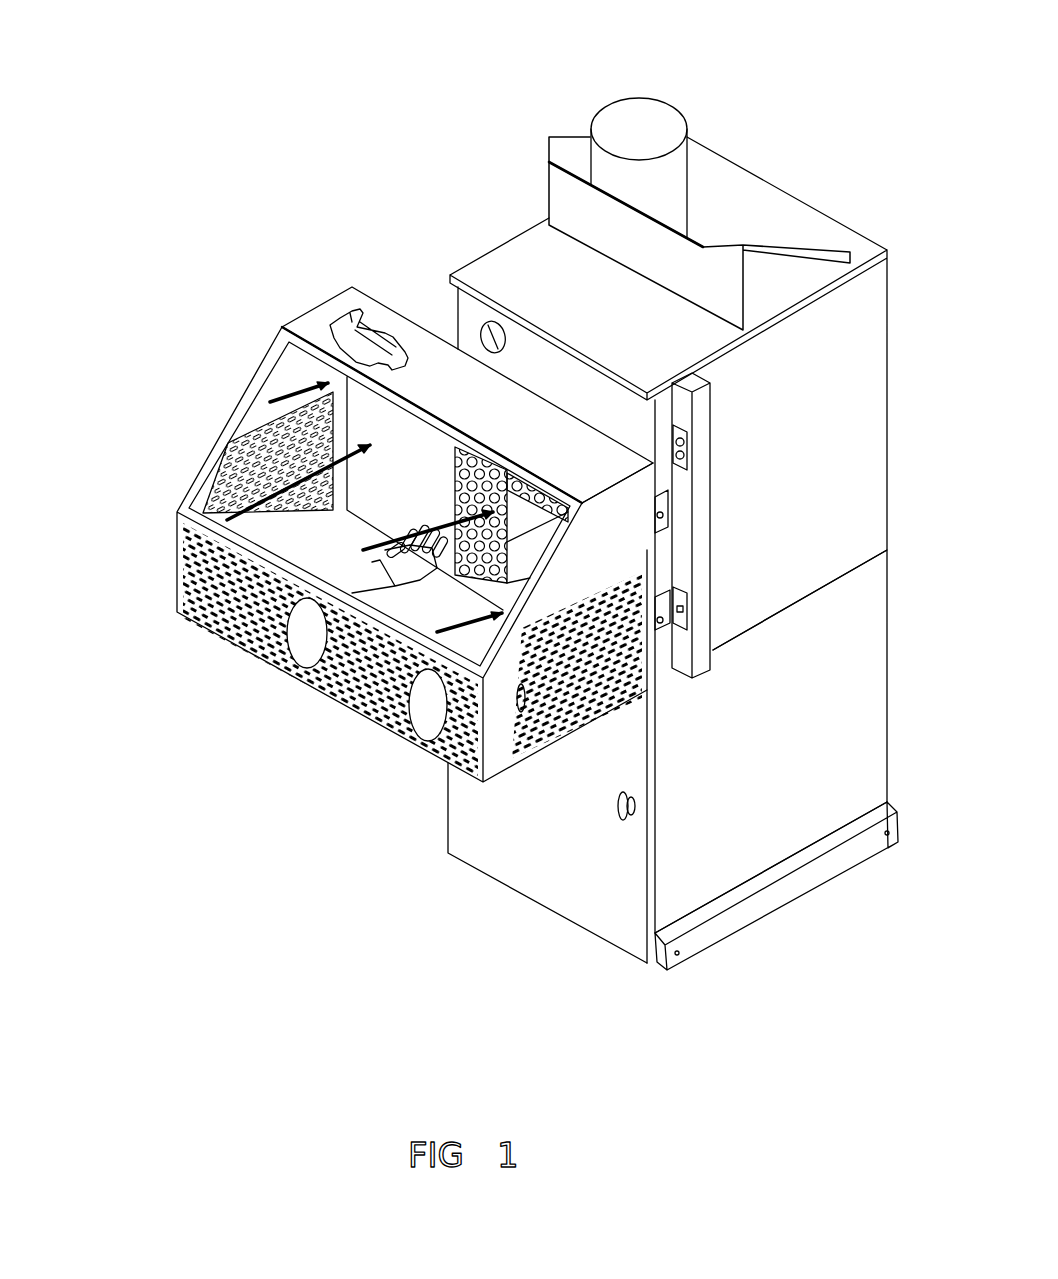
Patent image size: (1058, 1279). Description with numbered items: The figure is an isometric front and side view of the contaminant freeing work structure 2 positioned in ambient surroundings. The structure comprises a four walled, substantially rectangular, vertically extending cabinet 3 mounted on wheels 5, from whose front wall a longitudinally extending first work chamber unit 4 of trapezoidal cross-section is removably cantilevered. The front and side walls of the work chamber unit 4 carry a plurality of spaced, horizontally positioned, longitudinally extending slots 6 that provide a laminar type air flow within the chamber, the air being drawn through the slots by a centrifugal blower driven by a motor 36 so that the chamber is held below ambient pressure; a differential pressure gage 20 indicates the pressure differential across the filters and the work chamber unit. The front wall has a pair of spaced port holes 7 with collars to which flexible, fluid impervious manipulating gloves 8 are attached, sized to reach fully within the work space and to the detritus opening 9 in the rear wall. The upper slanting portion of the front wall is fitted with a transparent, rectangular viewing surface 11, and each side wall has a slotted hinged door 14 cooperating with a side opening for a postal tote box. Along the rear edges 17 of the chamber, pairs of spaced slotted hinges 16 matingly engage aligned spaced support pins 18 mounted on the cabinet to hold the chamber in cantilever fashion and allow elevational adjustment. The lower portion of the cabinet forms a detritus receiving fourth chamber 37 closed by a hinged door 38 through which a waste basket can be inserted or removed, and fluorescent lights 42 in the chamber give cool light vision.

The contaminant freeing work structure 2 is at (892, 355).
The cabinet 3 is at (820, 497).
The first work chamber unit 4 is at (510, 432).
The wheels 5 is at (658, 963).
The slots 6 is at (345, 703).
The port holes 7 is at (298, 652).
The manipulating gloves 8 is at (393, 588).
The detritus opening 9 is at (525, 513).
The viewing surface 11 is at (277, 385).
The slotted hinged door 14 is at (586, 556).
The slotted hinges 16 is at (663, 517).
The rear edges 17 is at (667, 508).
The support pins 18 is at (662, 460).
The differential pressure gage 20 is at (480, 332).
The motor 36 is at (615, 115).
The fourth chamber 37 is at (793, 733).
The hinged door 38 is at (527, 845).
The fluorescent lights 42 is at (347, 325).